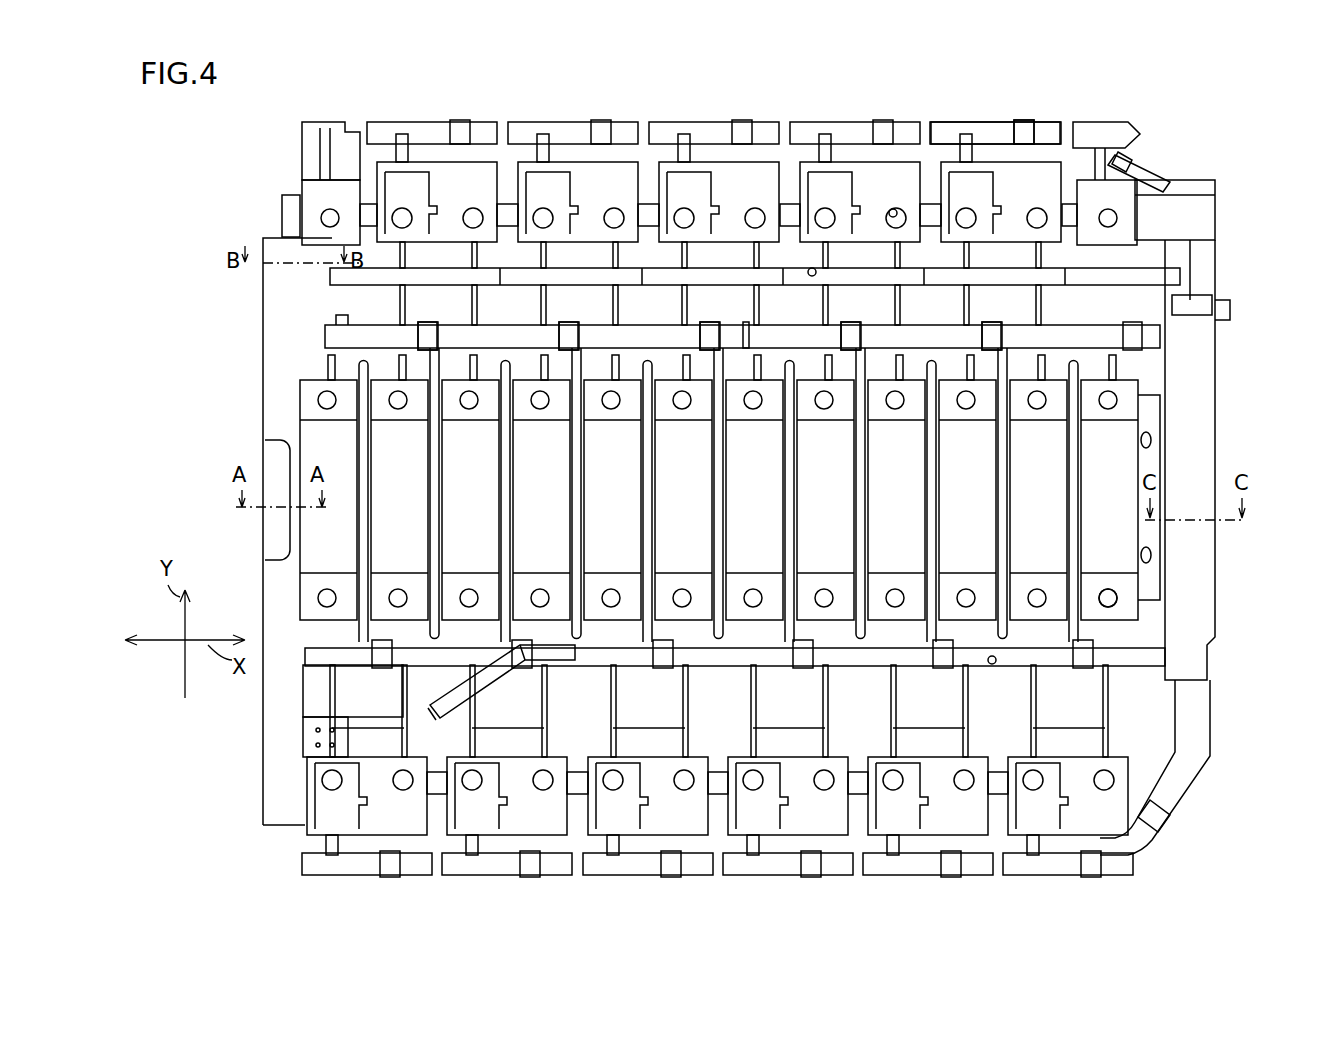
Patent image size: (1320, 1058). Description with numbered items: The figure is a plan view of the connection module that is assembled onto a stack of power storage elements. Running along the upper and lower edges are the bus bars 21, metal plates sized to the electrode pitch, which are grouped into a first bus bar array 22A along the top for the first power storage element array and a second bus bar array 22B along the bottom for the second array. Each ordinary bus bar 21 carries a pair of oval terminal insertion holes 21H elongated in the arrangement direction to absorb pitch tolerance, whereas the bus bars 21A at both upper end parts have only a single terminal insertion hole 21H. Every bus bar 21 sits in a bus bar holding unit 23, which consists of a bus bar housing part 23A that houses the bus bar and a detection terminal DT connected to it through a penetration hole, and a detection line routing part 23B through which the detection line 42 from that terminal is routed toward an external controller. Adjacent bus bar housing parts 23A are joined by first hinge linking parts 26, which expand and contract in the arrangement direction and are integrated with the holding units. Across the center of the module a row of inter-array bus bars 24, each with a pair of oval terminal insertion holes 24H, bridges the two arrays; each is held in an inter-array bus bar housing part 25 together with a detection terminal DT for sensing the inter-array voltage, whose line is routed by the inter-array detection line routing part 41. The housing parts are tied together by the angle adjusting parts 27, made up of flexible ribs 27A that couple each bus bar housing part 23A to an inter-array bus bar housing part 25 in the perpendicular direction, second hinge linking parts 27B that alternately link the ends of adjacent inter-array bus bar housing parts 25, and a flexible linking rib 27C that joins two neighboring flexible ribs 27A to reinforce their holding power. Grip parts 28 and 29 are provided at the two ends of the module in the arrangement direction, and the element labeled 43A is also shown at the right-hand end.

The bus bar 21 is at (1036, 190).
The bus bar at upper end part 21A is at (1150, 186).
The terminal insertion hole 21H is at (893, 209).
The first bus bar array 22A is at (282, 221).
The second bus bar array 22B is at (290, 817).
The bus bar holding unit 23 is at (412, 113).
The bus bar housing part 23A is at (992, 166).
The detection line routing part 23B is at (940, 130).
The inter-array bus bar 24 is at (330, 446).
The terminal insertion hole 24H is at (1116, 612).
The inter-array bus bar housing part 25 is at (1062, 460).
The first hinge linking part 26 is at (513, 204).
The angle adjusting part 27 is at (730, 601).
The flexible rib 27A is at (385, 302).
The second hinge linking part 27B is at (330, 362).
The flexible linking rib 27C is at (668, 735).
The grip part 28 is at (250, 735).
The grip part 29 is at (1237, 540).
The inter-array detection line routing part 41 is at (746, 322).
The detection line 42 is at (812, 270).
The duct 43A is at (1206, 760).
The detection terminal DT is at (1128, 222).